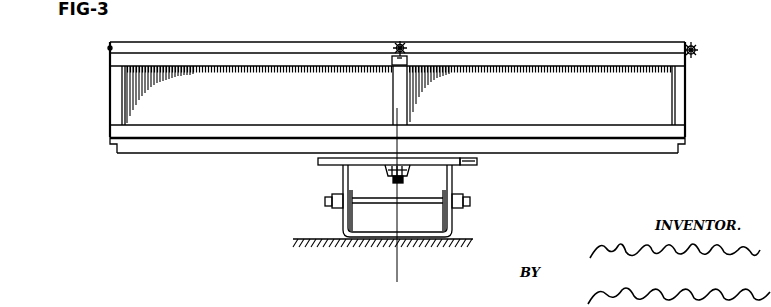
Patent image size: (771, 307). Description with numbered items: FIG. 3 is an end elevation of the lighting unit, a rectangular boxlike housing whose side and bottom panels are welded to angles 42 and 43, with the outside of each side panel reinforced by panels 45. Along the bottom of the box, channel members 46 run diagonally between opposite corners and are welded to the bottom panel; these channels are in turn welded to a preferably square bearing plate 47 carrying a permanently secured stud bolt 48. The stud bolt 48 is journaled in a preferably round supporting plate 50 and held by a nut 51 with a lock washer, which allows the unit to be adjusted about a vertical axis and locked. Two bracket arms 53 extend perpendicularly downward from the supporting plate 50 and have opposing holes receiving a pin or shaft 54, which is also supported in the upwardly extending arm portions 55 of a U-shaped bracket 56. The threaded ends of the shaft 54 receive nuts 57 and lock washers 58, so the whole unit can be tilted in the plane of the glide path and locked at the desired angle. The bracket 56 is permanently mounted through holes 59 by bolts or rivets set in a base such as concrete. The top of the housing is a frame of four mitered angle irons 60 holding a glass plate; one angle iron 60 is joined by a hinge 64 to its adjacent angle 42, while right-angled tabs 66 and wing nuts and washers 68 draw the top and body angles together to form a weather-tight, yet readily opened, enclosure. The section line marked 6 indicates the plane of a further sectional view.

The section line 6- 6 is at (413, 133).
The angle 42 is at (675, 65).
The angle 43 is at (695, 148).
The reinforcing panel 45 is at (131, 116).
The channel member 46 is at (212, 152).
The bearing plate 47 is at (477, 160).
The stud bolt 48 is at (393, 180).
The supporting plate 50 is at (462, 166).
The nut 51 is at (409, 171).
The bracket arm 53 is at (342, 180).
The pin or shaft 54 is at (421, 200).
The upwardly extending arm portion 55 is at (343, 222).
The U-shaped bracket 56 is at (430, 239).
The nut 57 is at (325, 200).
The lock washer 58 is at (462, 210).
The hole 59 is at (362, 242).
The angle iron 60 is at (608, 52).
The hinge 64 is at (109, 47).
The right-angled tab 66 is at (396, 46).
The wing nut and washer 68 is at (404, 46).